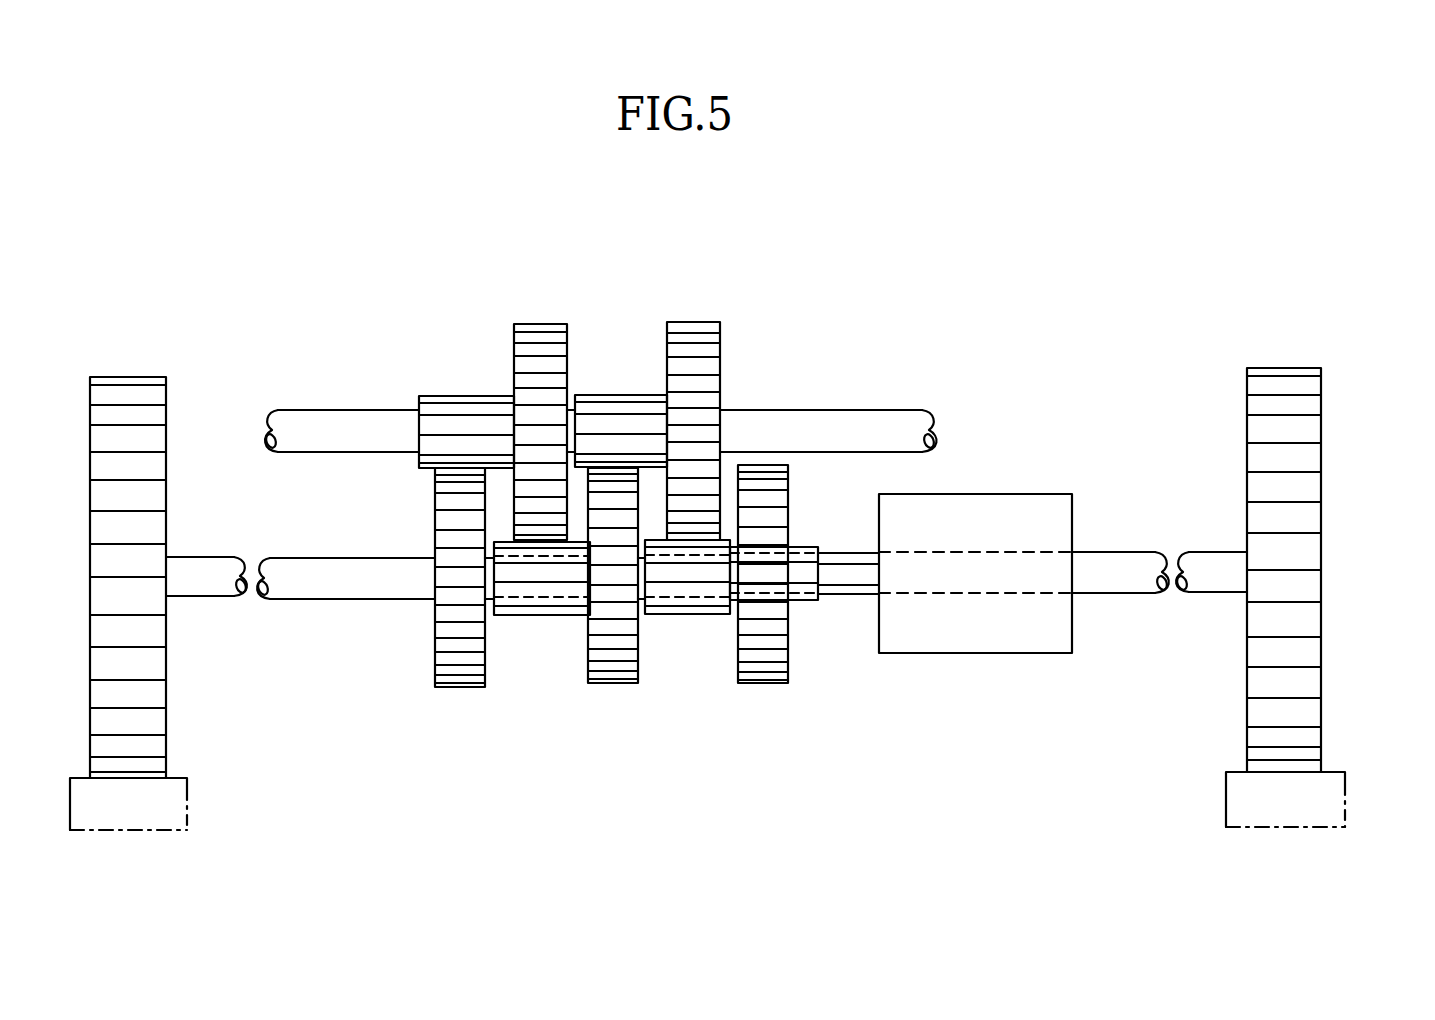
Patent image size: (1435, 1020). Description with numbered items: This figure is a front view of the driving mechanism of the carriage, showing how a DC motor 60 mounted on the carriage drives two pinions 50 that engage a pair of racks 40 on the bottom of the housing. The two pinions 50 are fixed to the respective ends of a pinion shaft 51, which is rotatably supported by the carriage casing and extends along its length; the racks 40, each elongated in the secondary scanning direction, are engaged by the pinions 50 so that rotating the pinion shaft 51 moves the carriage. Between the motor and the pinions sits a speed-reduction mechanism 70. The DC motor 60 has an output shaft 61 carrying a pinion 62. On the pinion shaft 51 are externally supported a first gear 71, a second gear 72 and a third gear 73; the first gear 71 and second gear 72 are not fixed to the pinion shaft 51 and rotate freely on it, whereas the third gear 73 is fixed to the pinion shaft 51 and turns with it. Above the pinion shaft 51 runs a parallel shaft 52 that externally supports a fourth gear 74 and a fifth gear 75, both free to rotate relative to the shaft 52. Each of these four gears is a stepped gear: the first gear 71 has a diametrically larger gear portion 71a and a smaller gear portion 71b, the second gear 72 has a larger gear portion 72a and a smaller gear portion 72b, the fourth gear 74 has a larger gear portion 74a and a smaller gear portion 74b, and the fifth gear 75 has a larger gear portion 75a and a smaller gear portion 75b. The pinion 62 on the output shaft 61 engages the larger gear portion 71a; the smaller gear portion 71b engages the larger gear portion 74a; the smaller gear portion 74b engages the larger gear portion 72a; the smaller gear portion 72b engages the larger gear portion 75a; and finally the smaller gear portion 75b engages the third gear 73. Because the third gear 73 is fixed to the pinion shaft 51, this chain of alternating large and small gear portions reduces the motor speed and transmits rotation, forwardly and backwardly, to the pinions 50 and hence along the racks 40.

The rack 40 is at (181, 777).
The pinion 50 is at (167, 395).
The pinion shaft 51 is at (322, 575).
The shaft 52 is at (848, 408).
The DC motor 60 is at (1042, 494).
The output shaft 61 is at (833, 568).
The pinion 62 is at (806, 603).
The speed-reduction mechanism 70 is at (644, 282).
The first gear 71 is at (762, 612).
The diametrically larger gear portion 71a is at (758, 686).
The diametrically smaller gear portion 71b is at (683, 616).
The second gear 72 is at (575, 614).
The diametrically larger gear portion 72a is at (609, 686).
The diametrically smaller gear portion 72b is at (501, 616).
The third gear 73 is at (455, 688).
The fourth gear 74 is at (680, 395).
The diametrically larger gear portion 74a is at (700, 321).
The diametrically smaller gear portion 74b is at (607, 395).
The fifth gear 75 is at (518, 387).
The diametrically larger gear portion 75a is at (533, 323).
The diametrically smaller gear portion 75b is at (451, 395).